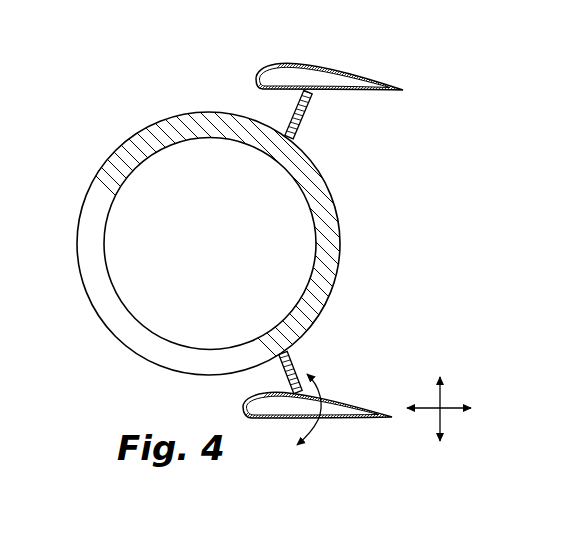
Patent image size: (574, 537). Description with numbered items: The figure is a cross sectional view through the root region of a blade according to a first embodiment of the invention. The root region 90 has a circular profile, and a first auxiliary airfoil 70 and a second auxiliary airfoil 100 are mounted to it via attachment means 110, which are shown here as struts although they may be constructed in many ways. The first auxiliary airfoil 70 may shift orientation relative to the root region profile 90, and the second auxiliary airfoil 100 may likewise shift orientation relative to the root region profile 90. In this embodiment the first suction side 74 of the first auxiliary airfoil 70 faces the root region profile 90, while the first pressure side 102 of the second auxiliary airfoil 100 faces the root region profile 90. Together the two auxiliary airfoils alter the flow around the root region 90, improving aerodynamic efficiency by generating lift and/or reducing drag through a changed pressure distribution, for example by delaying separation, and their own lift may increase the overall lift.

The root region 90 is at (151, 81).
The second auxiliary airfoil 100 is at (355, 56).
The first pressure side 102 is at (340, 93).
The attachment means 110 is at (308, 108).
The first auxiliary airfoil 70 is at (342, 367).
The first suction side 74 is at (353, 400).